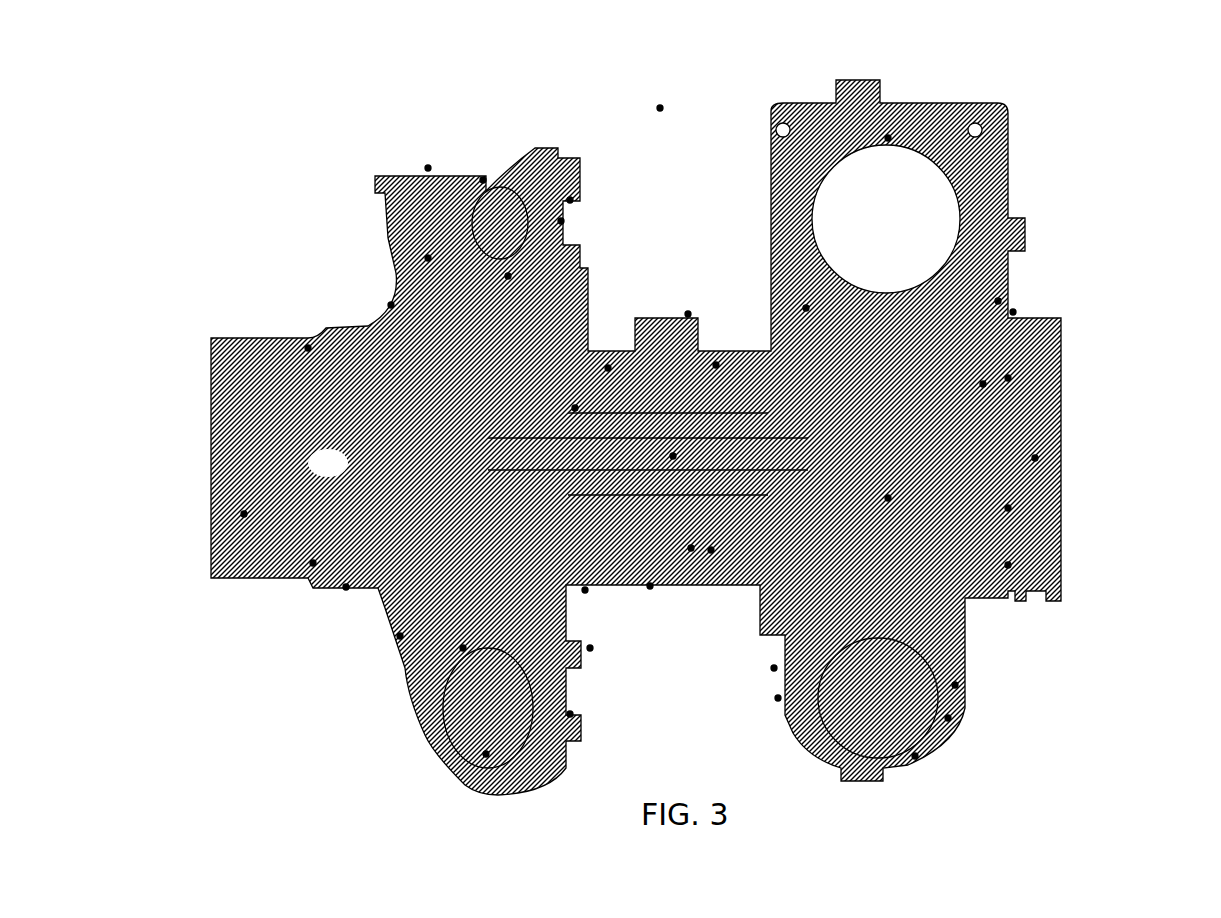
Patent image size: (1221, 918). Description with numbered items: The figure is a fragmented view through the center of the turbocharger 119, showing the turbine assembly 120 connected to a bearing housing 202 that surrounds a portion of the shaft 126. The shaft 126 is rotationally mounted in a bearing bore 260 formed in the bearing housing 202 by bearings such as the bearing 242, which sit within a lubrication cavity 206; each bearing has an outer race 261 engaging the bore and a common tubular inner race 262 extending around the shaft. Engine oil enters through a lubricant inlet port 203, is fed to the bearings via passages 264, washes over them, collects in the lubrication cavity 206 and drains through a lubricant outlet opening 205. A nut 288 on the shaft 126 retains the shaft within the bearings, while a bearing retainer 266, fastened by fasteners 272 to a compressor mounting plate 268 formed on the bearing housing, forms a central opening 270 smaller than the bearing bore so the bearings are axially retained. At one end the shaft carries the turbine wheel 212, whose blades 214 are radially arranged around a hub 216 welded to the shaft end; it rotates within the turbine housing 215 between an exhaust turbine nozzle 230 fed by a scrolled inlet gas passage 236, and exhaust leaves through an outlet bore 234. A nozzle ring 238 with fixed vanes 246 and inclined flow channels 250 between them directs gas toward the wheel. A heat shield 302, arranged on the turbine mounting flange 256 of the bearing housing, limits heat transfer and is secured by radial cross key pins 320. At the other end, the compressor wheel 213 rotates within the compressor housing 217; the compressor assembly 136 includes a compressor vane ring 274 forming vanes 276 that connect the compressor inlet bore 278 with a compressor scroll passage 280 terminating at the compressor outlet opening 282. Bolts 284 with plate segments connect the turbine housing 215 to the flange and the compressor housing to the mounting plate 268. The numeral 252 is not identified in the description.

The turbocharger 119 is at (652, 100).
The turbine assembly 120 is at (1032, 128).
The shaft 126 is at (680, 306).
The compressor assembly 136 is at (312, 196).
The bearing housing 202 is at (582, 640).
The lubricant inlet port 203 is at (665, 448).
The lubricant outlet opening 205 is at (577, 582).
The lubrication cavity 206 is at (703, 542).
The turbine wheel 212 is at (1000, 500).
The compressor wheel 213 is at (766, 660).
The blades 214 is at (975, 376).
The turbine housing 215 is at (990, 293).
The hub 216 is at (905, 471).
The compressor housing 217 is at (392, 628).
The exhaust turbine nozzle 230 is at (1000, 557).
The outlet bore 234 is at (1072, 455).
The inlet gas passage 236 is at (907, 748).
The nozzle ring 238 is at (1005, 304).
The bearing 242 is at (567, 400).
The fixed vanes 246 is at (947, 677).
The flow channels 250 is at (1000, 370).
The turbine inlet 252 is at (827, 253).
The turbine mounting flange 256 is at (798, 300).
The bearing bore 260 is at (562, 706).
The outer race 261 is at (600, 360).
The common inner race 262 is at (642, 578).
The passages 264 is at (708, 357).
The bearing retainer 266 is at (383, 297).
The compressor mounting plate 268 is at (553, 213).
The central opening 270 is at (300, 340).
The fasteners 272 is at (455, 640).
The compressor vane ring 274 is at (500, 268).
The vanes 276 is at (475, 172).
The compressor inlet bore 278 is at (236, 506).
The compressor scroll passage 280 is at (478, 746).
The compressor outlet opening 282 is at (420, 160).
The bolts 284 is at (562, 192).
The nut 288 is at (338, 579).
The heat shield 302 is at (940, 710).
The radial cross key pins 320 is at (770, 690).